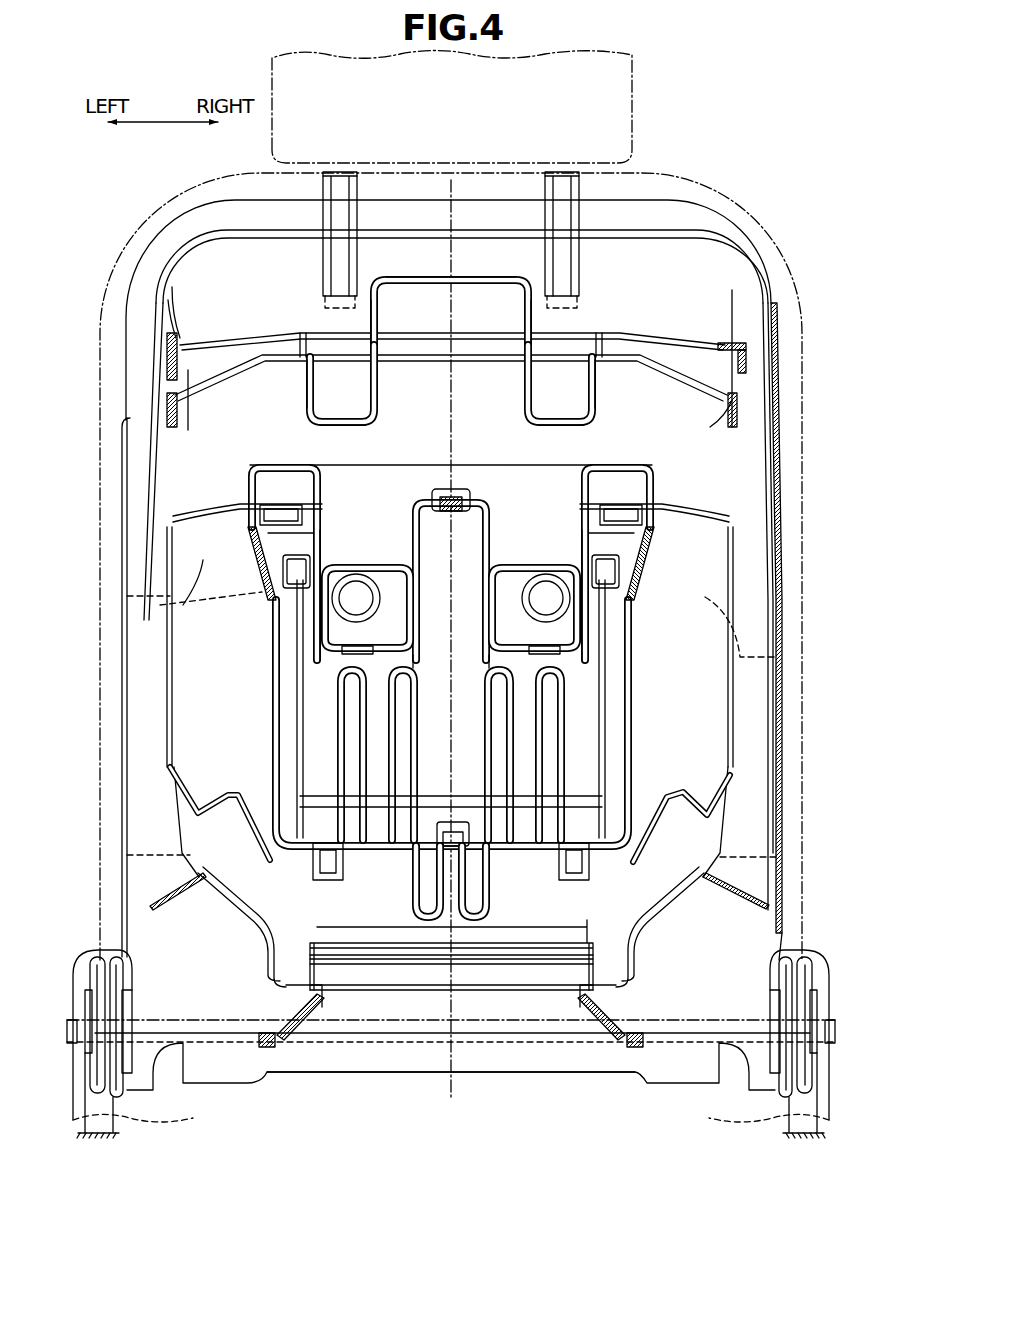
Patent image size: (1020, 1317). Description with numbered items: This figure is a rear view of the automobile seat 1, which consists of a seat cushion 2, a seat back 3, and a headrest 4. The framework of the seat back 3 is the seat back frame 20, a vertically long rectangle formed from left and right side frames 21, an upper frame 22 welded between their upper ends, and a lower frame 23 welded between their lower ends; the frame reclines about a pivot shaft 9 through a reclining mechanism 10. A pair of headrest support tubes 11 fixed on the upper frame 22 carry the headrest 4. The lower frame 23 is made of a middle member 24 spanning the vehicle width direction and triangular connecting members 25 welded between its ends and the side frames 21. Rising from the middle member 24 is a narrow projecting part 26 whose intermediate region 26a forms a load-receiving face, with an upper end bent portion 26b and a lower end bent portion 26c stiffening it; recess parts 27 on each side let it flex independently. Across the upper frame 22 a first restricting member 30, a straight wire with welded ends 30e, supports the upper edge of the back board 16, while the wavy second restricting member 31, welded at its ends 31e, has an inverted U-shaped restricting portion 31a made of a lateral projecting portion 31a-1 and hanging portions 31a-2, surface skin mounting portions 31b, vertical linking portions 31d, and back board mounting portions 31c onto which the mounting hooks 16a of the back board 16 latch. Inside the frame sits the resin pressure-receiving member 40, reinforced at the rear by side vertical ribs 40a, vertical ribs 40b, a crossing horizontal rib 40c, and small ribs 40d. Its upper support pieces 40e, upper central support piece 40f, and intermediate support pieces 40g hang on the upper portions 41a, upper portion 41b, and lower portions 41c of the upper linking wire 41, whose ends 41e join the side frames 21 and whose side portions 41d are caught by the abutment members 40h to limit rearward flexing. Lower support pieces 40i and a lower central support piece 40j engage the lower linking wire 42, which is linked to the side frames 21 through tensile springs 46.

The seat 1 is at (683, 134).
The seat cushion 2 is at (744, 946).
The seat back 3 is at (805, 521).
The headrest 4 is at (636, 90).
The pivot shaft 9 is at (556, 1046).
The reclining mechanism 10 is at (775, 1095).
The headrest support tube 11 is at (322, 278).
The back board 16 is at (168, 300).
The mounting hook 16a is at (300, 336).
The seat back frame 20 is at (772, 264).
The side frame 21 is at (121, 676).
The upper frame 22 is at (668, 205).
The lower frame 23 is at (497, 1071).
The middle member 24 is at (371, 1022).
The connecting member 25 is at (220, 917).
The projecting part 26 is at (406, 975).
The intermediate region 26a is at (484, 984).
The upper end bent portion 26b is at (400, 941).
The lower end bent portion 26c is at (408, 992).
The recess part 27 is at (288, 977).
The first restricting member 30 is at (237, 334).
The end of first restricting member 30e is at (166, 358).
The second restricting member 31 is at (447, 295).
The restricting portion 31a is at (451, 341).
The projecting portion 31a-1 is at (396, 342).
The hanging portion 31a-2 is at (522, 345).
The surface skin mounting portion 31b is at (346, 426).
The back board mounting portion 31c is at (447, 401).
The linking portion 31d is at (630, 392).
The end of second restricting member 31e is at (180, 428).
The pressure-receiving member 40 is at (451, 678).
The side vertical rib 40a is at (284, 650).
The vertical rib 40b is at (537, 752).
The horizontal rib 40c is at (484, 848).
The small rib 40d is at (488, 882).
The upper support piece 40e is at (255, 520).
The upper central support piece 40f is at (447, 494).
The intermediate support piece 40g is at (366, 622).
The abutment member 40h is at (283, 575).
The lower support piece 40i is at (328, 880).
The lower central support piece 40j is at (447, 822).
The upper linking wire 41 is at (468, 561).
The upper portion of upper linking wire 41a is at (310, 488).
The upper portion of upper linking wire 41b is at (476, 503).
The lower portion of upper linking wire 41c is at (487, 664).
The side portion of upper linking wire 41d is at (326, 562).
The end of upper linking wire 41e is at (240, 600).
The lower linking wire 42 is at (677, 791).
The tensile spring 46 is at (190, 743).